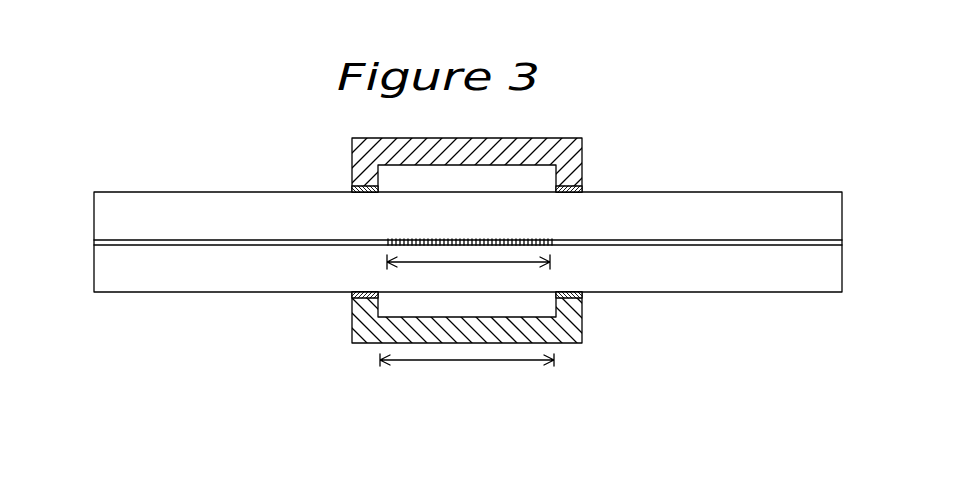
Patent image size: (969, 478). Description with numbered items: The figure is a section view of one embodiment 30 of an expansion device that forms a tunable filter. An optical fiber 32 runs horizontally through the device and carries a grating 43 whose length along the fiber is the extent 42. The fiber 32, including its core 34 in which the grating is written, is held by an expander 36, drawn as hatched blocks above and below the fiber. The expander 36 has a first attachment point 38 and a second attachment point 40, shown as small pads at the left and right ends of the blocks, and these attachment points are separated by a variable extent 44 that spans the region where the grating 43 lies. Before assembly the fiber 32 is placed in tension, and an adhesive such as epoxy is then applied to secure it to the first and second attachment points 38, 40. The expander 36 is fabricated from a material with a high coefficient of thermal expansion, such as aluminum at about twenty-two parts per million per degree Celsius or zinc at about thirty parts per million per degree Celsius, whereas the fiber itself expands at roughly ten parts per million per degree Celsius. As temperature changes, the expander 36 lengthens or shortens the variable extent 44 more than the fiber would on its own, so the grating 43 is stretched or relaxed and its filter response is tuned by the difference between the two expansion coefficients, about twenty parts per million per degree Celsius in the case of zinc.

The embodiment of the expansion device 30 is at (182, 167).
The fiber 32 is at (203, 293).
The fiber core 34 is at (137, 233).
The expander 36 is at (557, 130).
The first attachment point 38 is at (350, 188).
The second attachment point 40 is at (586, 188).
The extent of the grating 42 is at (468, 271).
The grating 43 is at (483, 233).
The variable extent 44 is at (467, 383).